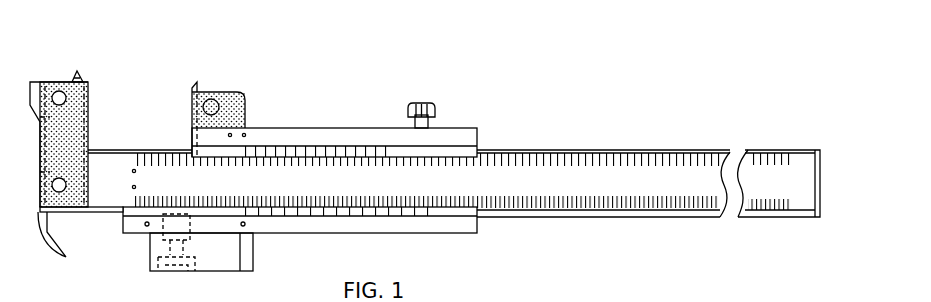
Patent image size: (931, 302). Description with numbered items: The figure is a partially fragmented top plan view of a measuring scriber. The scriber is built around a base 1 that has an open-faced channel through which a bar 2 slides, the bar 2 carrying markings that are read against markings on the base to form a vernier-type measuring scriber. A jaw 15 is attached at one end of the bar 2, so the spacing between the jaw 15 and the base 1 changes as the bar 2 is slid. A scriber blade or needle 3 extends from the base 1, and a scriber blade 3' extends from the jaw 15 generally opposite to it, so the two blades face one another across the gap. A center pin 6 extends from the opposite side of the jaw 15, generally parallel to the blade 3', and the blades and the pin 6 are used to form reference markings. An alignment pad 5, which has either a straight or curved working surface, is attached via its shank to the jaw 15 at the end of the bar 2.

The base 1 is at (247, 95).
The bar 2 is at (553, 151).
The scriber blade or needle 3 is at (74, 244).
The first scriber blade 3' is at (225, 65).
The alignment pad 5 is at (43, 80).
The center pin 6 is at (84, 73).
The jaw 15 is at (66, 142).